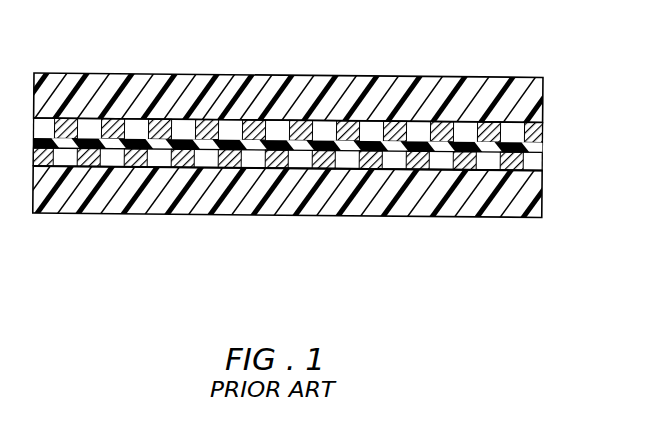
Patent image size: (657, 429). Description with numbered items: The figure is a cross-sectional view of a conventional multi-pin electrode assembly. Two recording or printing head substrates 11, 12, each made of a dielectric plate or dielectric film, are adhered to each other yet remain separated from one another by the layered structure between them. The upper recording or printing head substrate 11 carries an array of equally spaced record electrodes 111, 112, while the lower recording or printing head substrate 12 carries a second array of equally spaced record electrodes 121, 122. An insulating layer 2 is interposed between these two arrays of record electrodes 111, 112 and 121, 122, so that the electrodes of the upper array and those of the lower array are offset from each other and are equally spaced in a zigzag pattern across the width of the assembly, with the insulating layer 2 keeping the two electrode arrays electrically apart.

The recording or printing head substrate 11 is at (522, 95).
The record electrode 111 is at (546, 128).
The record electrode 112 is at (488, 125).
The insulating layer 2 is at (544, 145).
The recording or printing head substrate 12 is at (504, 192).
The record electrode 121 is at (545, 172).
The record electrode 122 is at (463, 168).